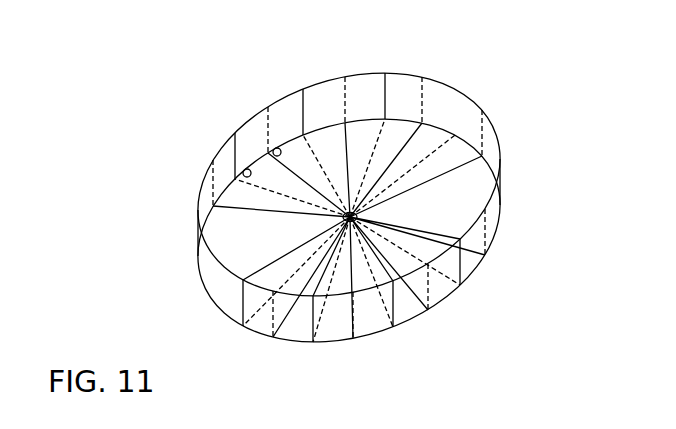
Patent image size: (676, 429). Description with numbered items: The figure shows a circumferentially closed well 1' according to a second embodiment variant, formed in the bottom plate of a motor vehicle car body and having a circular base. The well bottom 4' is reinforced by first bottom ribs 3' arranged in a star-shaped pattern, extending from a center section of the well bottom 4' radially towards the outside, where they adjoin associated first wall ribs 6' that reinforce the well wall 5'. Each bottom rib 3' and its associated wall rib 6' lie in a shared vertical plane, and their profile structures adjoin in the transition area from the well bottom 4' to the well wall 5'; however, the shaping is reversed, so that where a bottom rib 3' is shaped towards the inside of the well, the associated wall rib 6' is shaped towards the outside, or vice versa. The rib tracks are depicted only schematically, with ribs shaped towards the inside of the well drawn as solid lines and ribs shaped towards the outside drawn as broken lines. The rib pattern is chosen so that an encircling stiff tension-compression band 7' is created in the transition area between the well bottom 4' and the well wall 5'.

The well 1' is at (322, 184).
The first bottom rib 3' is at (386, 230).
The well bottom 4' is at (236, 225).
The well wall 5' is at (348, 199).
The first wall rib 6' is at (362, 190).
The tension-compression band 7' is at (257, 125).